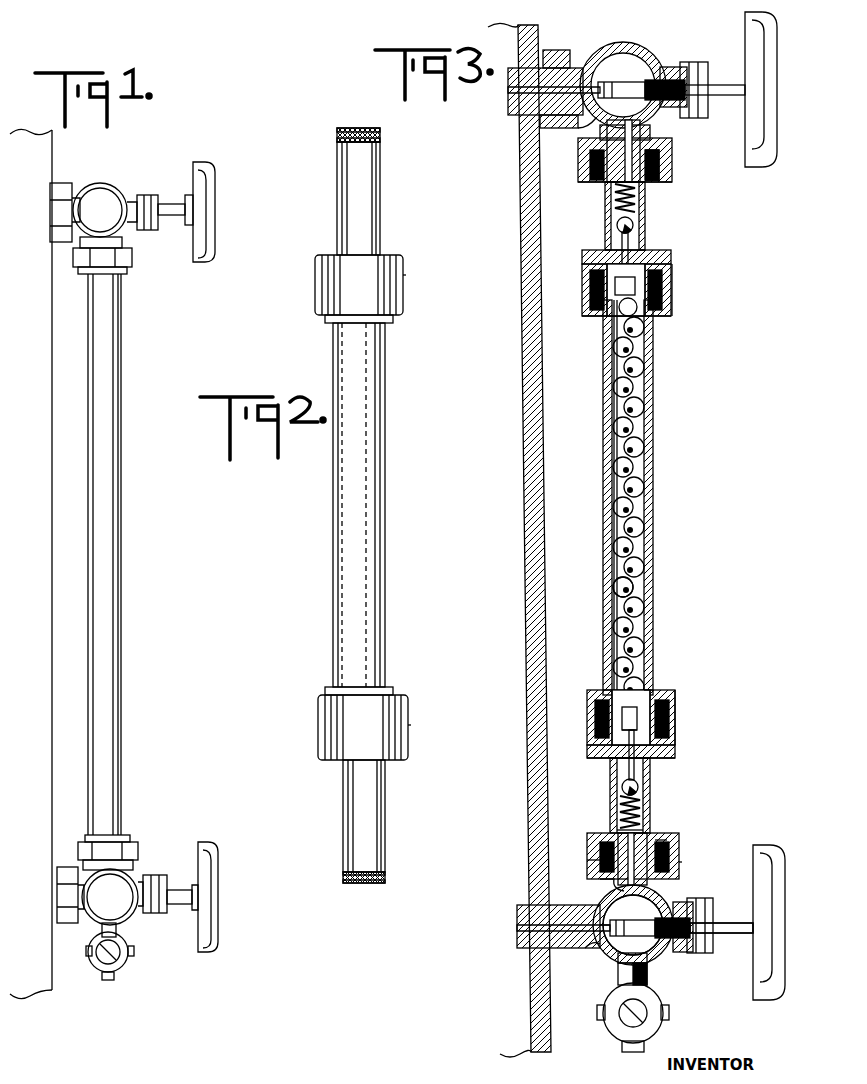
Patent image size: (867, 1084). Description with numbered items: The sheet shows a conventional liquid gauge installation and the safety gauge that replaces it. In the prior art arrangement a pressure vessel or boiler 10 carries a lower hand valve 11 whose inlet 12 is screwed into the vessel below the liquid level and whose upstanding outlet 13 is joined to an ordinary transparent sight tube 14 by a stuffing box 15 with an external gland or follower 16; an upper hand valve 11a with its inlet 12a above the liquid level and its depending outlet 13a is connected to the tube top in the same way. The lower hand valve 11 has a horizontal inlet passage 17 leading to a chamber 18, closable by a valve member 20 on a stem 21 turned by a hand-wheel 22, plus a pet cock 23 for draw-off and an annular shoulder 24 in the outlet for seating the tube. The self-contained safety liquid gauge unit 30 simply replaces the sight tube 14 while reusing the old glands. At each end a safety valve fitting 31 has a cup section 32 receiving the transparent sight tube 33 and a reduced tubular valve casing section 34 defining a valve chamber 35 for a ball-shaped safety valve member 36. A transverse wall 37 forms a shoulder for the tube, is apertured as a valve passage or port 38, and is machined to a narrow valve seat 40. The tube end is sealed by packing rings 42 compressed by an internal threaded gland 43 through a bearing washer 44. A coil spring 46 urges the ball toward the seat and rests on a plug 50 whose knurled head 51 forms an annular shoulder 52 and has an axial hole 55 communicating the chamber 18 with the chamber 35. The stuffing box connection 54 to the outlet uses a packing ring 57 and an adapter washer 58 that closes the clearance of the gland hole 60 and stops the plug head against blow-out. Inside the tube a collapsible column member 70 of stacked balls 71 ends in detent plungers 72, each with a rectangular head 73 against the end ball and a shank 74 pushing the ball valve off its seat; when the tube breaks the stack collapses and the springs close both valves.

In FIG. 1, the pressure vessel or boiler 10 is at (52, 566).
In FIG. 3, the pressure vessel or boiler 10 is at (545, 486).
In FIG. 1, the hand valve 11 is at (126, 925).
In FIG. 3, the hand valve 11 is at (668, 954).
In FIG. 1, the hand valve 11a is at (116, 185).
In FIG. 3, the hand valve 11a is at (630, 45).
In FIG. 1, the inlet 12 is at (62, 917).
In FIG. 3, the inlet 12 is at (517, 942).
In FIG. 1, the inlet 12a is at (58, 185).
In FIG. 3, the inlet 12a is at (508, 100).
In FIG. 1, the outlet 13 is at (130, 874).
In FIG. 3, the outlet 13 is at (668, 895).
In FIG. 1, the outlet 13a is at (117, 230).
In FIG. 3, the outlet 13a is at (662, 122).
In FIG. 1, the sight tube 14 is at (121, 606).
In FIG. 1, the stuffing box 15 is at (80, 278).
In FIG. 3, the stuffing box 15 is at (581, 178).
In FIG. 1, the gland or follower 16 is at (128, 270).
In FIG. 3, the gland or follower 16 is at (578, 153).
In FIG. 3, the inlet passage 17 is at (522, 927).
In FIG. 3, the chamber 18 is at (617, 975).
In FIG. 3, the valve member 20 is at (620, 955).
In FIG. 1, the stem 21 is at (178, 905).
In FIG. 3, the stem 21 is at (648, 950).
In FIG. 1, the hand-wheel 22 is at (214, 906).
In FIG. 3, the hand-wheel 22 is at (772, 858).
In FIG. 1, the pet cock 23 is at (95, 966).
In FIG. 3, the pet cock 23 is at (606, 1028).
In FIG. 3, the annular shoulder 24 is at (608, 882).
In FIG. 2, the safety liquid gauge unit 30 is at (392, 479).
In FIG. 3, the safety liquid gauge unit 30 is at (661, 487).
In FIG. 2, the safety valve fitting 31 is at (418, 285).
In FIG. 3, the safety valve fitting 31 is at (677, 298).
In FIG. 2, the cup section 32 is at (314, 295).
In FIG. 3, the cup section 32 is at (672, 278).
In FIG. 2, the sight tube 33 is at (333, 607).
In FIG. 3, the sight tube 33 is at (655, 600).
In FIG. 2, the valve casing section 34 is at (380, 200).
In FIG. 3, the valve casing section 34 is at (646, 218).
In FIG. 3, the valve chamber 35 is at (640, 770).
In FIG. 3, the safety valve member 36 is at (633, 228).
In FIG. 3, the transverse wall 37 is at (610, 750).
In FIG. 3, the valve passage or port 38 is at (620, 252).
In FIG. 3, the valve seat 40 is at (645, 253).
In FIG. 3, the packing rings 42 is at (590, 290).
In FIG. 2, the follower or gland 43 is at (390, 320).
In FIG. 3, the follower or gland 43 is at (658, 318).
In FIG. 3, the bearing washer or disc 44 is at (596, 318).
In FIG. 3, the coil spring 46 is at (615, 210).
In FIG. 2, the plug 50 is at (360, 121).
In FIG. 3, the plug 50 is at (645, 190).
In FIG. 2, the head 51 is at (380, 138).
In FIG. 3, the head 51 is at (575, 905).
In FIG. 2, the annular shoulder 52 is at (338, 140).
In FIG. 3, the annular shoulder 52 is at (590, 860).
In FIG. 3, the stuffing box connection 54 is at (687, 866).
In FIG. 3, the axial hole 55 is at (633, 924).
In FIG. 3, the packing ring 57 is at (660, 170).
In FIG. 3, the adapter washer 58 is at (650, 182).
In FIG. 3, the hole 60 is at (604, 186).
In FIG. 3, the collapsible column member 70 is at (610, 571).
In FIG. 3, the balls 71 is at (635, 405).
In FIG. 3, the detent pin or plunger 72 is at (596, 257).
In FIG. 3, the rectangular head 73 is at (625, 286).
In FIG. 3, the shank 74 is at (640, 736).